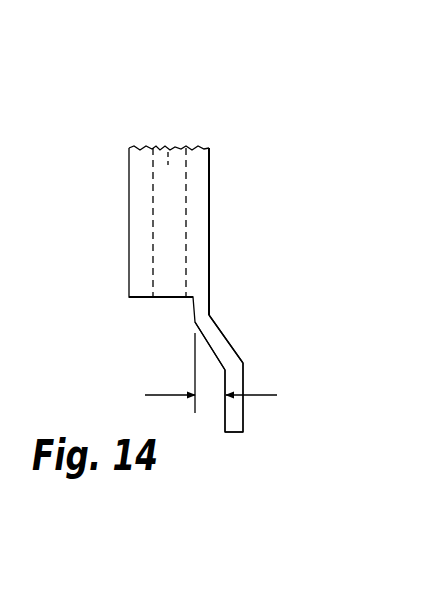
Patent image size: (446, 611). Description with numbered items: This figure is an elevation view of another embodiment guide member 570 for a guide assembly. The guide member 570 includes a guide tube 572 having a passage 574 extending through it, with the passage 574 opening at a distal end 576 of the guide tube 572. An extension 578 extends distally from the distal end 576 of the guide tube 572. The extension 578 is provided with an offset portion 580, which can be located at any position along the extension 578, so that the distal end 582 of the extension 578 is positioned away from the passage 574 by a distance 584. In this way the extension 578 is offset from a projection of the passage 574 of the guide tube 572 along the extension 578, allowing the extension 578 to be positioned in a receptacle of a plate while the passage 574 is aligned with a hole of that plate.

The guide member 570 is at (246, 220).
The guide tube 572 is at (211, 173).
The passage 574 is at (163, 147).
The distal end 576 is at (130, 297).
The extension 578 is at (229, 332).
The offset portion 580 is at (243, 377).
The distal end 582 is at (245, 432).
The distance 584 is at (155, 395).